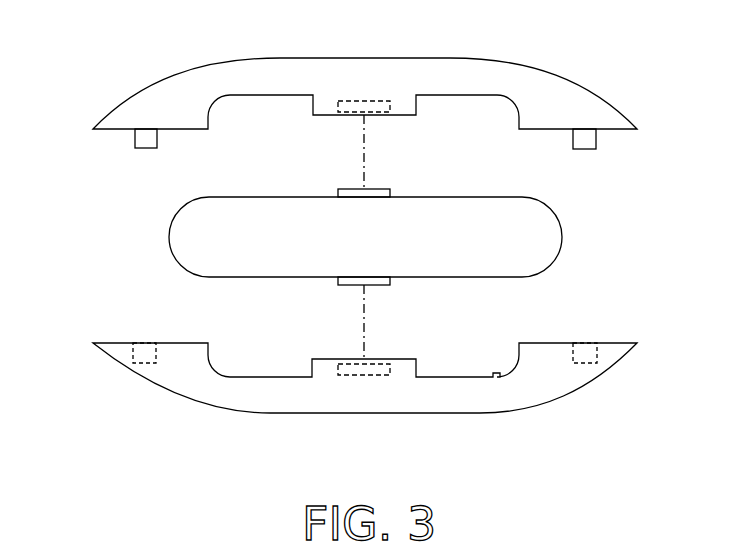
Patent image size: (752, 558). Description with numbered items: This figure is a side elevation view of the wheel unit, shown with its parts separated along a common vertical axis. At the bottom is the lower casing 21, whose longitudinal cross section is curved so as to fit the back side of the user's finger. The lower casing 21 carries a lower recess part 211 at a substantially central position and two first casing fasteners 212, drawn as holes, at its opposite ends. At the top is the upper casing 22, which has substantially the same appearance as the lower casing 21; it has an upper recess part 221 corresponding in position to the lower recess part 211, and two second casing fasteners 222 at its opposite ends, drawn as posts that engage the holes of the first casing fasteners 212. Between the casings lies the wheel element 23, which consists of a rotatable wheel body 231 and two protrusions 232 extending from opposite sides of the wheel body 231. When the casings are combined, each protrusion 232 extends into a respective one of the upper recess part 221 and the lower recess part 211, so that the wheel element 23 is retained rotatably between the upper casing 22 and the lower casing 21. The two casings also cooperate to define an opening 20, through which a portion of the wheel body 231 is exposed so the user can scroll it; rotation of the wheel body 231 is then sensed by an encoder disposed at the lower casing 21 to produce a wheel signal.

The opening 20 is at (240, 333).
The lower casing 21 is at (498, 414).
The lower recess part 211 is at (357, 372).
The first casing fasteners 212 is at (143, 363).
The upper casing 22 is at (190, 70).
The upper recess part 221 is at (360, 100).
The second casing fasteners 222 is at (142, 139).
The wheel element 23 is at (115, 243).
The wheel body 231 is at (533, 235).
The protrusions 232 is at (377, 193).